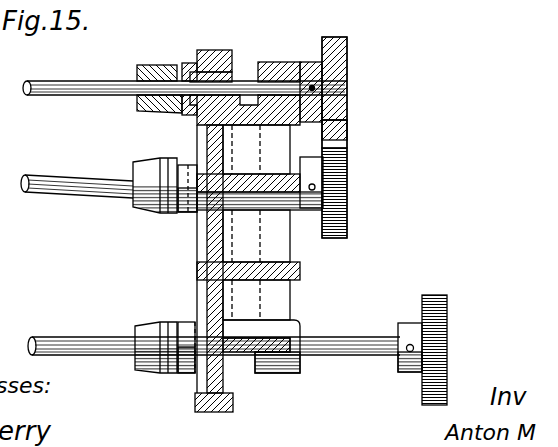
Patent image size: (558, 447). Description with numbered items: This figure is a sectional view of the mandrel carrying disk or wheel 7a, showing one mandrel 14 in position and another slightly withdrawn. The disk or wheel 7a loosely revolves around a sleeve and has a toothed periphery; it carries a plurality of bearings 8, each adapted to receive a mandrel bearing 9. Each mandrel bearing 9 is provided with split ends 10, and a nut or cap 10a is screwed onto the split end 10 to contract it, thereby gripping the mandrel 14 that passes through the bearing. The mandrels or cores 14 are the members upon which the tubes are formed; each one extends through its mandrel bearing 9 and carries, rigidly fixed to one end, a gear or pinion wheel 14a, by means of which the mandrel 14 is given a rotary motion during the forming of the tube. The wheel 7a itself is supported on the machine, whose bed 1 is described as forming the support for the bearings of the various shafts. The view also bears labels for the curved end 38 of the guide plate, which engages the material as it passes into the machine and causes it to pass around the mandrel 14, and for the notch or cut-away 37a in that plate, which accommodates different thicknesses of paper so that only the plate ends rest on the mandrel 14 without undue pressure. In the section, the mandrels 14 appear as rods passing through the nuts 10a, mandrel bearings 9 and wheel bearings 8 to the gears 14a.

The mandrel 14 is at (72, 75).
The gear or pinion wheel 14a is at (392, 31).
The nut or cap 10a is at (152, 65).
The split end 10 is at (150, 104).
The mandrel bearing 9 is at (184, 63).
The disk or wheel 7a is at (212, 50).
The bearing 8 is at (280, 62).
The notch or cut-away 37a is at (453, 20).
The curved end 38 is at (511, 15).
The bed 1 is at (456, 12).